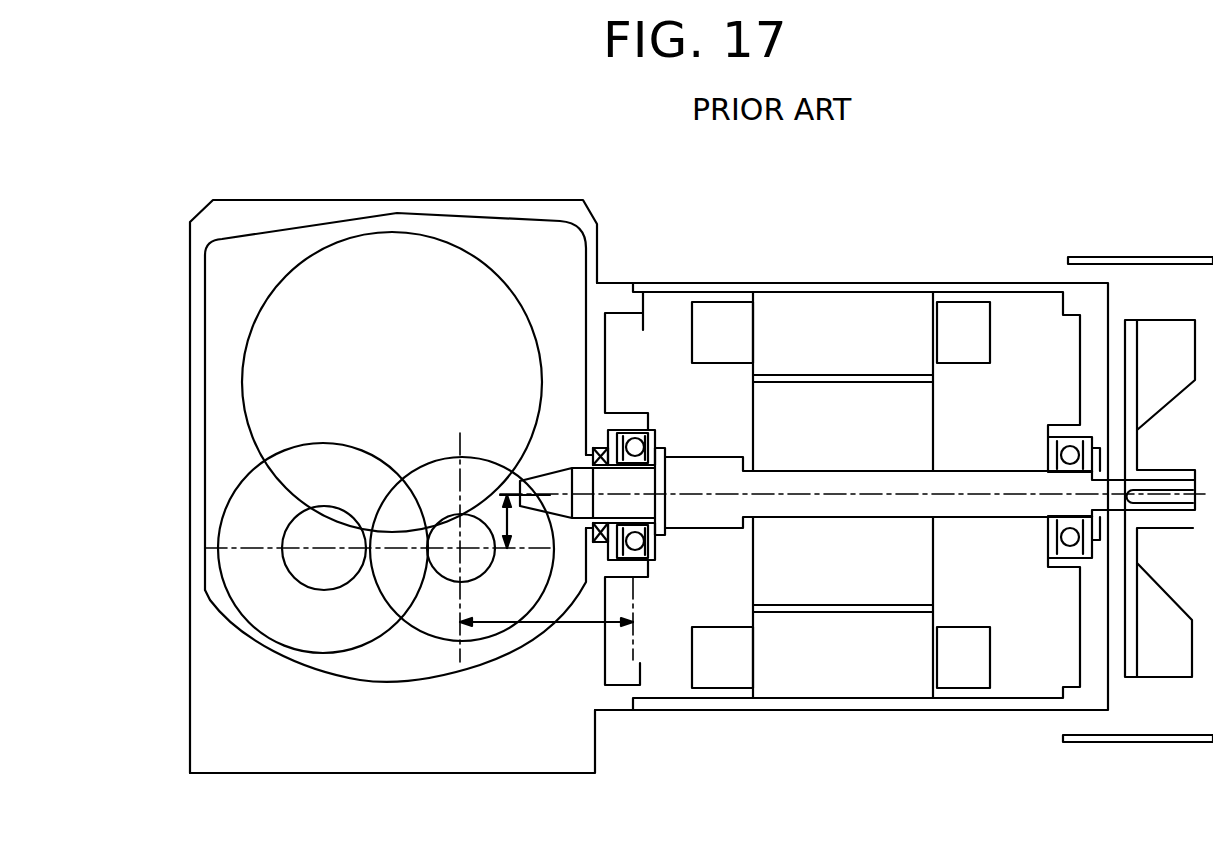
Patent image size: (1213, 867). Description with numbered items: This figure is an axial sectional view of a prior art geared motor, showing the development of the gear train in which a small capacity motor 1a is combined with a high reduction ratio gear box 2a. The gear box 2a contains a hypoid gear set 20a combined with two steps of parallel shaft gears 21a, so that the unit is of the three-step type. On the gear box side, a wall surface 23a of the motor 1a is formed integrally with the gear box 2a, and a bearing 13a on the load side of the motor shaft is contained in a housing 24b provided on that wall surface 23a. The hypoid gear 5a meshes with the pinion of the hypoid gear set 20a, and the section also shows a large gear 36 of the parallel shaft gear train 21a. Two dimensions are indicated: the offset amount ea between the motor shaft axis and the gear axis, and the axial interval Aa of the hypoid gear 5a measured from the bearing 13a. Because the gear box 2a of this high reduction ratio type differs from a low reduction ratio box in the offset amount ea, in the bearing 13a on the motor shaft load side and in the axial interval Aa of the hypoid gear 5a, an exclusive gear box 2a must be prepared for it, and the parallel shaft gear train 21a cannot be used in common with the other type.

The motor 1a is at (793, 288).
The gear box 2a is at (488, 212).
The hypoid gear 5a is at (477, 641).
The bearing 13a is at (655, 562).
The hypoid gear set 20a is at (532, 528).
The parallel shaft gears 21a is at (233, 473).
The wall surface 23a is at (598, 357).
The housing 24b is at (650, 363).
The large gear 36 is at (555, 467).
The offset amount ea is at (505, 518).
The axial interval Aa is at (528, 625).